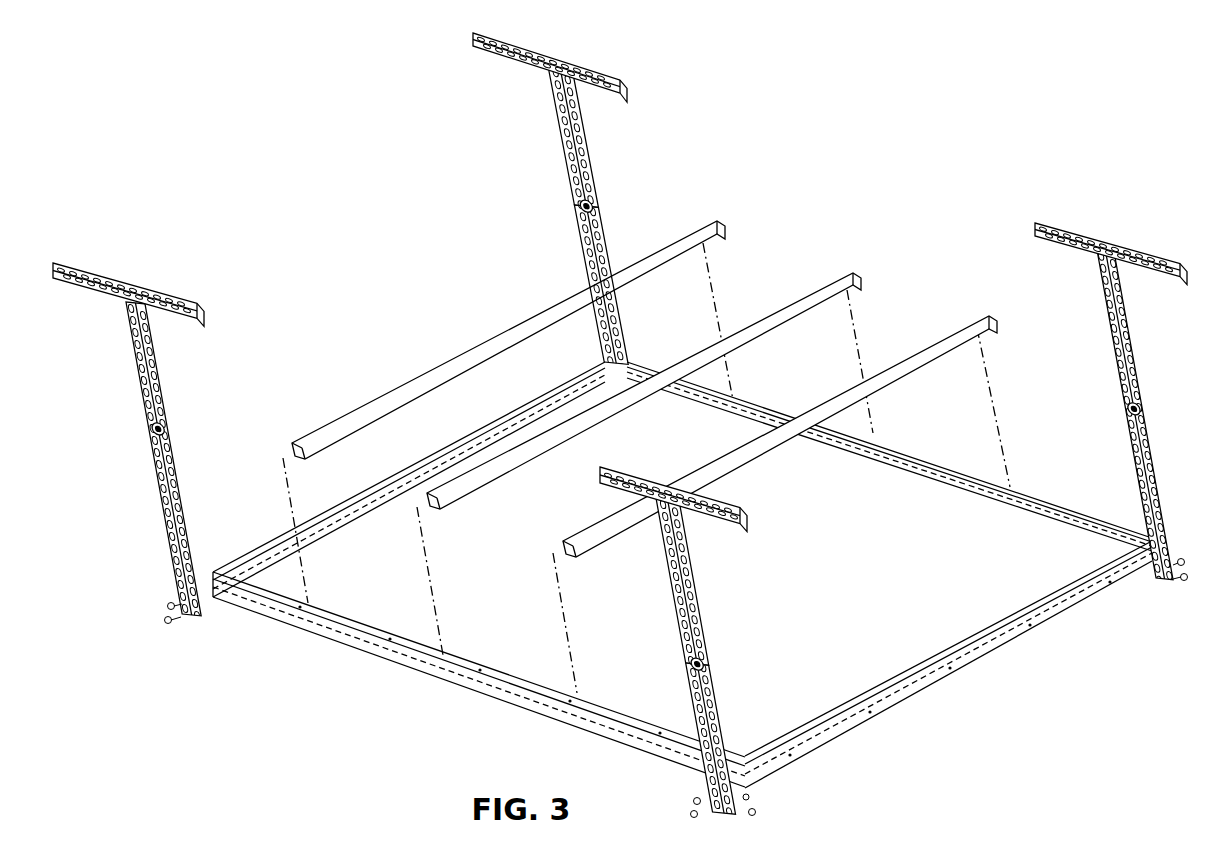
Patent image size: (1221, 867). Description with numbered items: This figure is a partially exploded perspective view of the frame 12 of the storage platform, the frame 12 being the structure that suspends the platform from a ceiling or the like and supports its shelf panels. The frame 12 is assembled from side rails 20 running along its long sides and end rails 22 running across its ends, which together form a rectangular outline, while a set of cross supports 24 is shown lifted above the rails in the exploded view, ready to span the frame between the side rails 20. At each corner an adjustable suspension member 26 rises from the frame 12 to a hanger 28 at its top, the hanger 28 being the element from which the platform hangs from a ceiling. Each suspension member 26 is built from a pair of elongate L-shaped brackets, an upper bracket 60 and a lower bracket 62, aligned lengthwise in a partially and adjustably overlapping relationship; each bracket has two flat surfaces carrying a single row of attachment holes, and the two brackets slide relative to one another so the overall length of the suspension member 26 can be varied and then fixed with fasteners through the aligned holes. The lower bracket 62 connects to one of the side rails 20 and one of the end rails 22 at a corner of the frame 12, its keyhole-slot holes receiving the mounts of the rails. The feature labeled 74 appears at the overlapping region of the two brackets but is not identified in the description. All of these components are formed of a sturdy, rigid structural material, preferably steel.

The frame 12 is at (410, 352).
The side rails 20 is at (340, 636).
The end rails 22 is at (430, 454).
The cross supports 24 is at (710, 222).
The adjustable suspension members 26 is at (622, 453).
The hangers 28 is at (528, 44).
The elongate L-shaped bracket 60 is at (588, 157).
The elongate L-shaped bracket 62 is at (610, 249).
The post joint fastener 74 is at (582, 229).